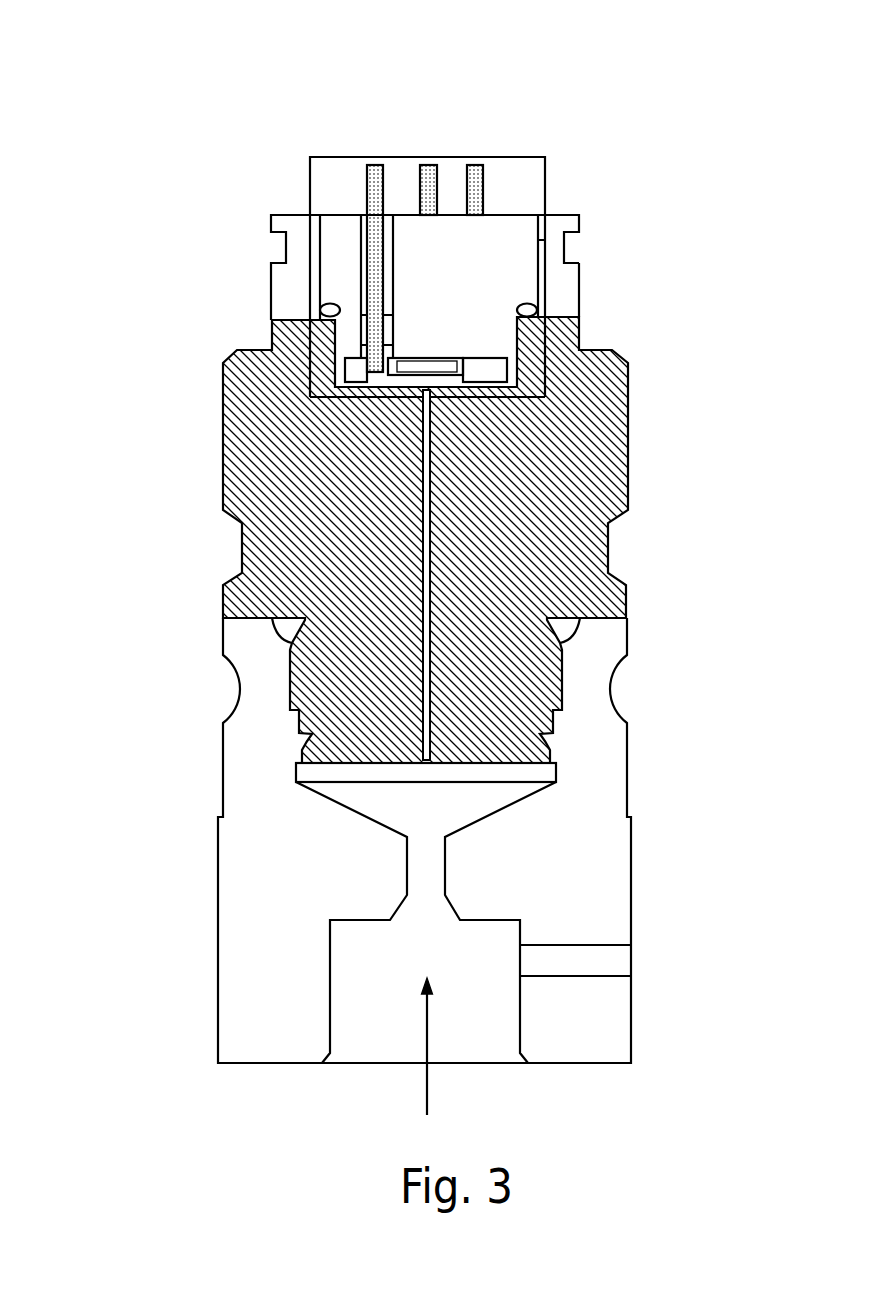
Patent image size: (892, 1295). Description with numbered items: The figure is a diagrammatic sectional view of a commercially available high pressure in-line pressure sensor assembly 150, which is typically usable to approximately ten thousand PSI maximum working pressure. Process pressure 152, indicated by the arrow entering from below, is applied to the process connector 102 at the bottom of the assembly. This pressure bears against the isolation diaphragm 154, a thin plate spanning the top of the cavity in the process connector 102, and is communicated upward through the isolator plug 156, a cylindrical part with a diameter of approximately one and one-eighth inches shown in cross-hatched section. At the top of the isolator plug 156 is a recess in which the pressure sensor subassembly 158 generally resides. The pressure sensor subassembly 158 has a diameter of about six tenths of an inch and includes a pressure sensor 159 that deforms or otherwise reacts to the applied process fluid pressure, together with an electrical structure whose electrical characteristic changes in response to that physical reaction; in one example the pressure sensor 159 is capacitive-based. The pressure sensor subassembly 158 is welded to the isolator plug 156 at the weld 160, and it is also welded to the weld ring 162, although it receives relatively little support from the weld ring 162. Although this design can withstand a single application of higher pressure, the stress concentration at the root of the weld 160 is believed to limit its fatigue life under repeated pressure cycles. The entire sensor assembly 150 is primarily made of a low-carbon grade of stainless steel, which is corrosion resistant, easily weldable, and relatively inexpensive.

The sensor assembly 150 is at (645, 82).
The pressure sensor subassembly 158 is at (560, 266).
The weld ring 162 is at (597, 296).
The isolator plug 156 is at (660, 452).
The weld 160 is at (324, 329).
The pressure sensor 159 is at (433, 357).
The isolation diaphragm 154 is at (483, 765).
The process connector 102 is at (631, 895).
The pressure 152 is at (427, 1078).